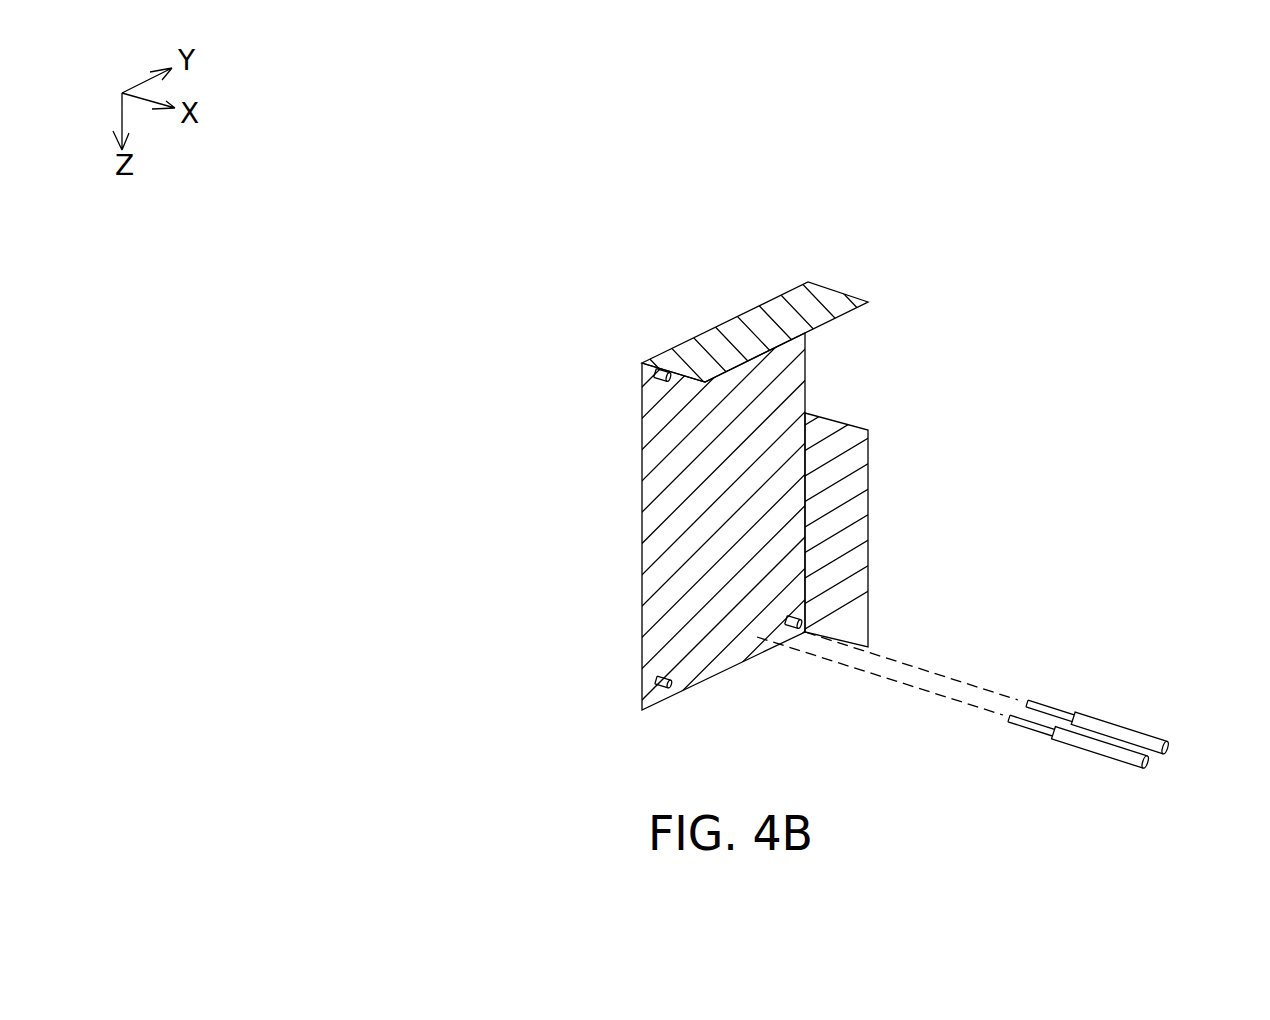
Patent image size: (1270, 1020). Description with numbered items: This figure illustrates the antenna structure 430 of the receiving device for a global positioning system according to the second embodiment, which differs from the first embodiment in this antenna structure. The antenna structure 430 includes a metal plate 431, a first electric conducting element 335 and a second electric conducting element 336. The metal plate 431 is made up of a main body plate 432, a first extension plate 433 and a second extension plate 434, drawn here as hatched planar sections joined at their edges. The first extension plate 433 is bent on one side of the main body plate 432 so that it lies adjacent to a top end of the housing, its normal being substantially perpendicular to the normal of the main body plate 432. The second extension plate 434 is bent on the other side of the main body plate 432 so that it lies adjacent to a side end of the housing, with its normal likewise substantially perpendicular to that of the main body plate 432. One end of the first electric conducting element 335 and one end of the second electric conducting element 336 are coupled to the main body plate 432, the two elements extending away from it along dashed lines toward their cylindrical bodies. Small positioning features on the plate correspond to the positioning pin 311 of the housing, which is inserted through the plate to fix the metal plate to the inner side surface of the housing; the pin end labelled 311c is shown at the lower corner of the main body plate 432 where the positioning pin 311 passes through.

The antenna structure 430 is at (1250, 95).
The metal plate 431 is at (347, 262).
The main body plate 432 is at (663, 407).
The first extension plate 433 is at (712, 350).
The second extension plate 434 is at (830, 473).
The positioning pin 311 is at (665, 680).
The pin end 311c is at (660, 686).
The first electric conducting element 335 is at (1102, 738).
The second electric conducting element 336 is at (1123, 720).